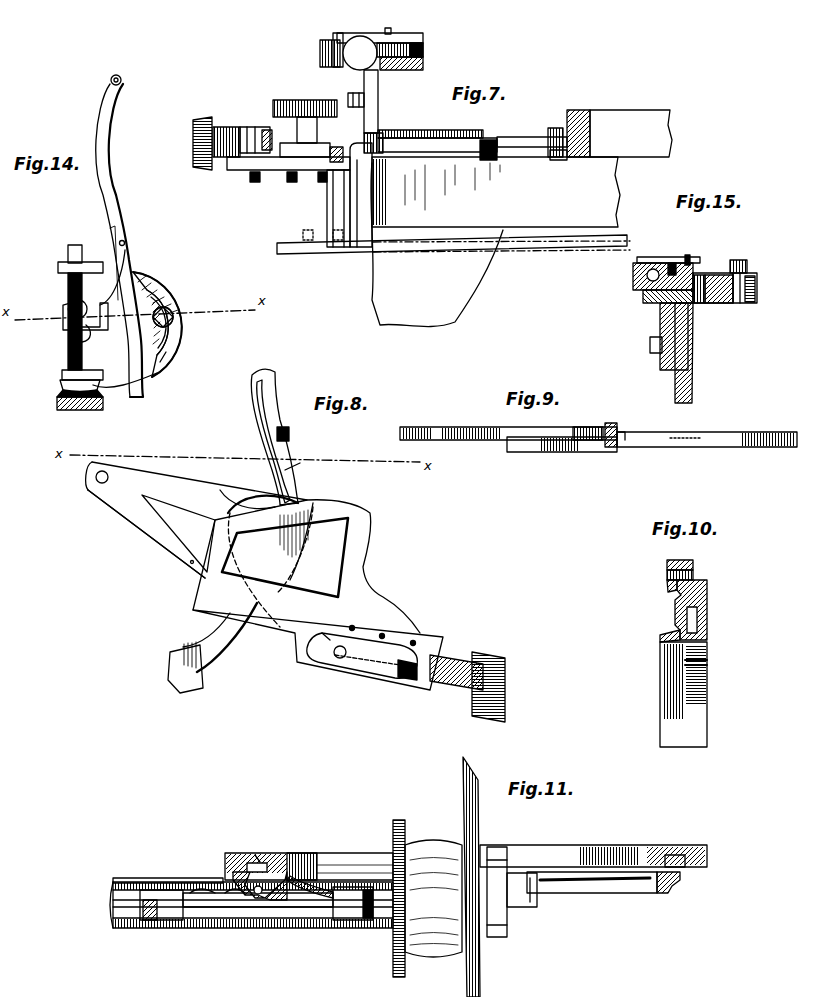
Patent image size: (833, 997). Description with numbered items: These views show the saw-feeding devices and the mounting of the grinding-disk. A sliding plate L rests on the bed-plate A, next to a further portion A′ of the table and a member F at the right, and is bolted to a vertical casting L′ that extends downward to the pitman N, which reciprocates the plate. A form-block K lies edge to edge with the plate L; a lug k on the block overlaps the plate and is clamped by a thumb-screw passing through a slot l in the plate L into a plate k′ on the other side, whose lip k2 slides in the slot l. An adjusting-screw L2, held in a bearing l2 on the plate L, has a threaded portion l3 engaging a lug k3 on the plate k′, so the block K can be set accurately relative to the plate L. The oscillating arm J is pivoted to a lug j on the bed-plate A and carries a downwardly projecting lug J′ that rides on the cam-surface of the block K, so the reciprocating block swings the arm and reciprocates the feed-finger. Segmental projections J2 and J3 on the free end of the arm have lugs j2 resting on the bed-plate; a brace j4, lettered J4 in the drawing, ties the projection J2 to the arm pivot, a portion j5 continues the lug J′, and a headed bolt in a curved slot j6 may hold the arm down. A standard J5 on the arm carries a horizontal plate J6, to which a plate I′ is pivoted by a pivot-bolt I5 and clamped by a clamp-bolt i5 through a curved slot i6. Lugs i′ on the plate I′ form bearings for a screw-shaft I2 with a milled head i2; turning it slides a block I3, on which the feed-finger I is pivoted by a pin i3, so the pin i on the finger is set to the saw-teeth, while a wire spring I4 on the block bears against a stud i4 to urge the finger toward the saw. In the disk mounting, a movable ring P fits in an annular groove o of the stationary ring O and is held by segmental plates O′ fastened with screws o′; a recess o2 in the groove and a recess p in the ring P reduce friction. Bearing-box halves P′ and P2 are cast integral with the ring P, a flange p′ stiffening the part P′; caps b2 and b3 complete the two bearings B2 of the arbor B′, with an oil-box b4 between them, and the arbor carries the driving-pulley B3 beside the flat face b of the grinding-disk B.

In FIG. 14, the feed-finger I is at (102, 203).
In FIG. 15, the feed-finger I is at (705, 273).
In FIG. 14, the plate I′ is at (155, 378).
In FIG. 7, the plate I′ is at (423, 55).
In FIG. 15, the plate I′ is at (757, 282).
In FIG. 14, the screw-shaft I2 is at (63, 295).
In FIG. 15, the screw-shaft I2 is at (643, 295).
In FIG. 14, the block I3 is at (70, 325).
In FIG. 7, the block I3 is at (320, 50).
In FIG. 15, the block I3 is at (633, 272).
In FIG. 14, the spring I4 is at (138, 268).
In FIG. 7, the spring I4 is at (372, 33).
In FIG. 15, the spring I4 is at (655, 257).
In FIG. 14, the pivot bolt I5 is at (156, 335).
In FIG. 15, the pivot bolt I5 is at (699, 303).
In FIG. 14, the pin i is at (121, 85).
In FIG. 14, the lugs i′ is at (58, 267).
In FIG. 7, the lugs i′ is at (333, 33).
In FIG. 14, the milled head i2 is at (80, 401).
In FIG. 7, the milled head i2 is at (360, 53).
In FIG. 15, the pivot-pin i3 is at (672, 263).
In FIG. 14, the stud i4 is at (125, 243).
In FIG. 7, the stud i4 is at (390, 28).
In FIG. 15, the stud i4 is at (688, 255).
In FIG. 14, the clamp-bolt i5 is at (173, 320).
In FIG. 7, the clamp-bolt i5 is at (423, 47).
In FIG. 15, the clamp-bolt i5 is at (747, 262).
In FIG. 14, the curved slot i6 is at (178, 347).
In FIG. 15, the curved slot i6 is at (752, 303).
In FIG. 7, the oscillating arm J is at (505, 137).
In FIG. 8, the oscillating arm J is at (183, 490).
In FIG. 9, the oscillating arm J is at (485, 427).
In FIG. 8, the downwardly-projecting lug J′ is at (300, 492).
In FIG. 9, the downwardly-projecting lug J′ is at (625, 432).
In FIG. 7, the segmental projection J2 is at (450, 130).
In FIG. 8, the segmental projection J2 is at (183, 708).
In FIG. 8, the segmental projection J3 is at (290, 393).
In FIG. 9, the segmental projection J3 is at (585, 425).
In FIG. 8, the arm brace J4 is at (165, 540).
In FIG. 7, the standard J5 is at (348, 97).
In FIG. 15, the standard J5 is at (660, 325).
In FIG. 7, the horizontal plate J6 is at (405, 70).
In FIG. 15, the horizontal plate J6 is at (718, 303).
In FIG. 9, the horizontal plate J6 is at (610, 423).
In FIG. 7, the lug j is at (558, 160).
In FIG. 7, the downwardly-projecting lug j2 is at (497, 158).
In FIG. 7, the brace j4 is at (548, 130).
In FIG. 8, the downwardly-projecting portion j5 is at (277, 435).
In FIG. 8, the curved slot j6 is at (306, 462).
In FIG. 8, the form-block K is at (352, 505).
In FIG. 9, the form-block K is at (678, 432).
In FIG. 7, the lug k is at (320, 143).
In FIG. 7, the plate k′ is at (297, 182).
In FIG. 8, the plate k′ is at (265, 490).
In FIG. 9, the plate k′ is at (585, 452).
In FIG. 7, the lip k2 is at (255, 182).
In FIG. 8, the lip k2 is at (340, 660).
In FIG. 7, the lug k3 is at (290, 105).
In FIG. 7, the sliding plate L is at (362, 165).
In FIG. 8, the sliding plate L is at (318, 650).
In FIG. 7, the vertical casting L′ is at (327, 205).
In FIG. 7, the adjusting-screw L2 is at (205, 118).
In FIG. 8, the adjusting-screw L2 is at (460, 660).
In FIG. 7, the slot l is at (360, 185).
In FIG. 8, the slot l is at (323, 657).
In FIG. 7, the bearing l2 is at (243, 127).
In FIG. 7, the threaded portion l3 is at (265, 128).
In FIG. 8, the threaded portion l3 is at (410, 680).
In FIG. 7, the bed-plate A is at (496, 192).
In FIG. 7, the frame body A′ is at (437, 245).
In FIG. 7, the pitman N is at (453, 250).
In FIG. 7, the plate F is at (619, 133).
In FIG. 10, the stationary ring O is at (707, 605).
In FIG. 11, the stationary ring O is at (585, 845).
In FIG. 10, the segmental plates O′ is at (667, 588).
In FIG. 10, the annular groove o is at (697, 625).
In FIG. 11, the annular groove o is at (243, 857).
In FIG. 10, the screws o′ is at (693, 565).
In FIG. 11, the annular recess o2 is at (258, 863).
In FIG. 10, the movable ring P is at (671, 694).
In FIG. 11, the movable ring P is at (603, 891).
In FIG. 11, the bearing-box part P′ is at (330, 853).
In FIG. 11, the bearing-box part P2 is at (148, 878).
In FIG. 10, the recess p is at (672, 630).
In FIG. 11, the recess p is at (233, 880).
In FIG. 11, the flange p′ is at (308, 853).
In FIG. 11, the grinding-disk B is at (470, 975).
In FIG. 11, the arbor B′ is at (108, 910).
In FIG. 11, the bearings B2 is at (145, 900).
In FIG. 11, the driving-pulley B3 is at (433, 898).
In FIG. 11, the face b is at (468, 970).
In FIG. 11, the cap b2 is at (372, 918).
In FIG. 11, the cap b3 is at (195, 918).
In FIG. 11, the oil-box b4 is at (260, 915).